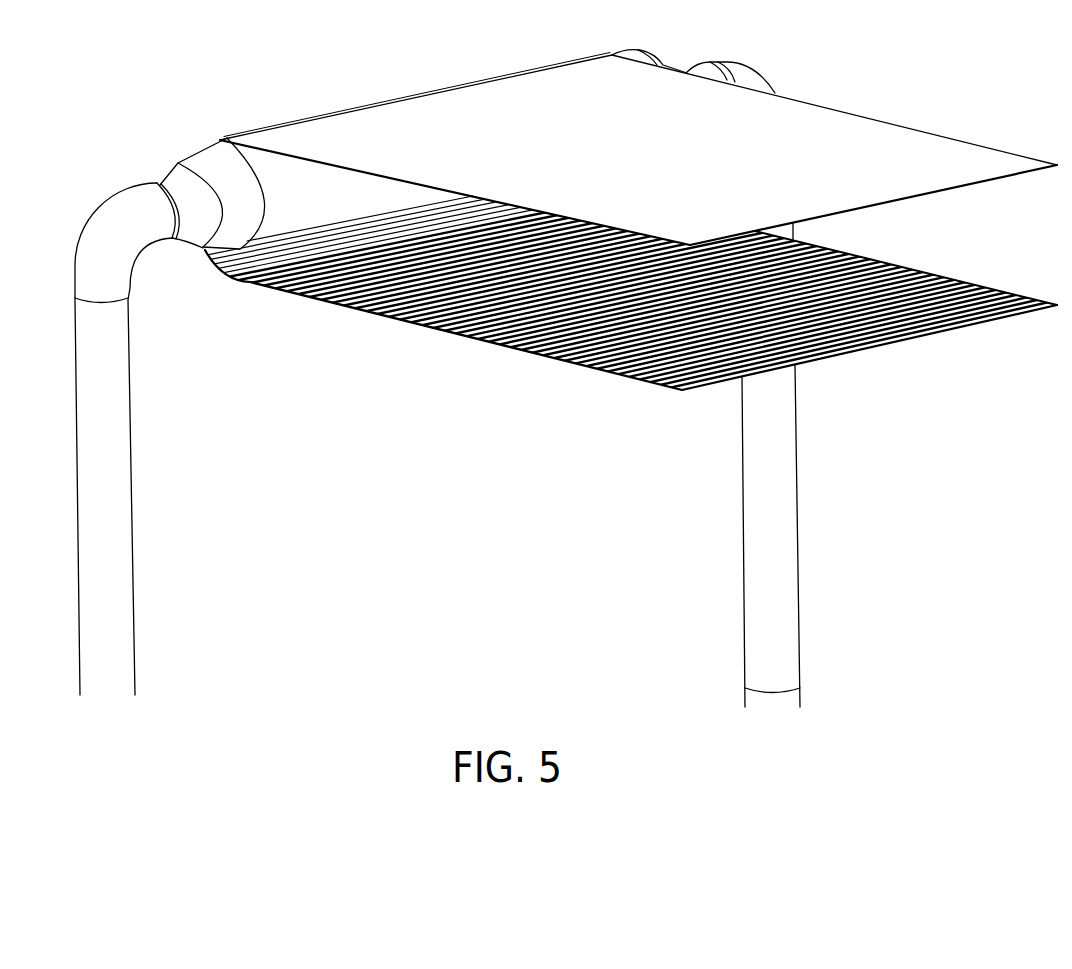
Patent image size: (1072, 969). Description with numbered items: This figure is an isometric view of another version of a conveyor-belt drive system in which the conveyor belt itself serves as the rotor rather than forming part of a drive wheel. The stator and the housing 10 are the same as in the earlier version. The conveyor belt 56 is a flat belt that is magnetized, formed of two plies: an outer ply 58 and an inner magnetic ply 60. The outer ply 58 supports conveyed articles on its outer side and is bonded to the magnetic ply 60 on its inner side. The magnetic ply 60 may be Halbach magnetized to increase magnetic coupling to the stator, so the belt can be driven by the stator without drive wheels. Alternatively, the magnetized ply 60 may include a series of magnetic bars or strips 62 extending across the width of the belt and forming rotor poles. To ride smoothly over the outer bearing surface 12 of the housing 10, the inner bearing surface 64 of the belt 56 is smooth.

The housing 10 is at (267, 233).
The outer bearing surface 12 is at (273, 175).
The conveyor belt 56 is at (920, 128).
The outer ply 58 is at (815, 122).
The inner magnetic ply 60 is at (551, 343).
The magnetic bars or strips 62 is at (221, 260).
The inner bearing surface 64 is at (955, 285).